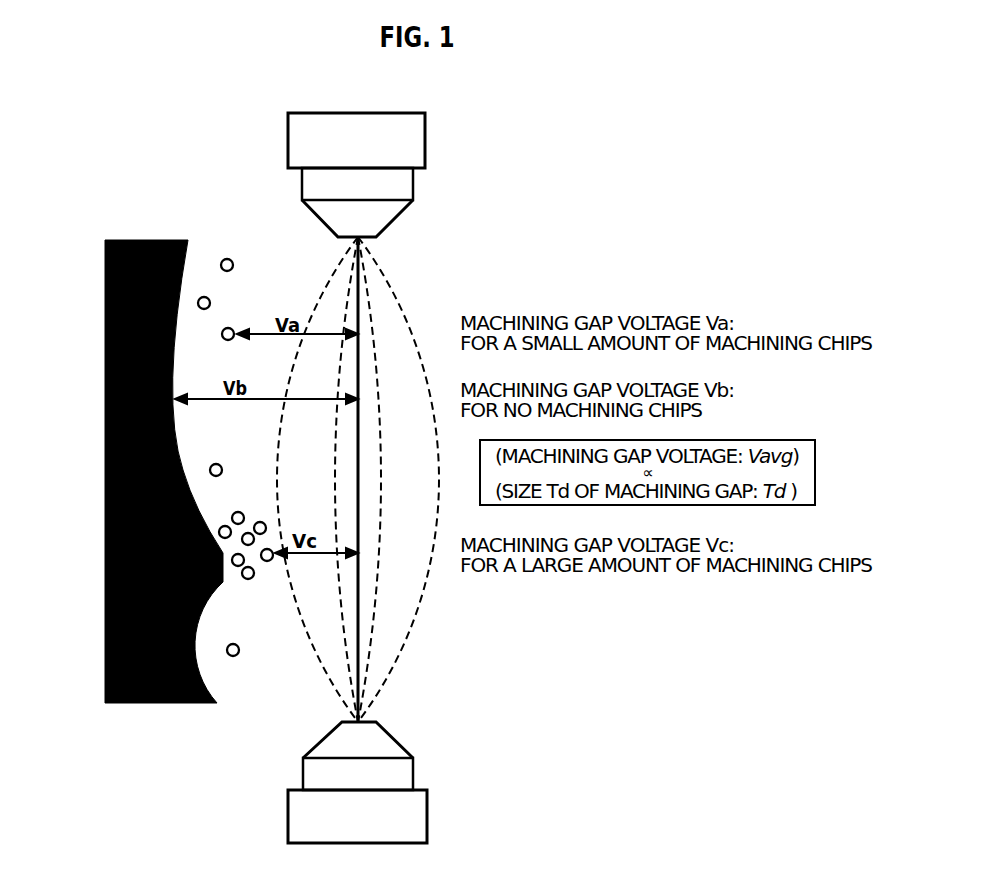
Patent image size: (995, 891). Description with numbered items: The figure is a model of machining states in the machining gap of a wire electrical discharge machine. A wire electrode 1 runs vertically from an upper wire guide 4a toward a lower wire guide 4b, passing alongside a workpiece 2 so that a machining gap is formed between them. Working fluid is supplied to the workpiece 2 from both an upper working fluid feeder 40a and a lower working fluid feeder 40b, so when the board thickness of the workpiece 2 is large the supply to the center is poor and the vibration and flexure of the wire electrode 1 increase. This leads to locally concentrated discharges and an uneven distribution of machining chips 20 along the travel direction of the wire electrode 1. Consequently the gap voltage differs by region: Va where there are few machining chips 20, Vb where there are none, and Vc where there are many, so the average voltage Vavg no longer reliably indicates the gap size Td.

The wire electrode 1 is at (358, 300).
The workpiece 2 is at (105, 357).
The machining chips 20 is at (227, 260).
The upper wire guide 4a is at (425, 138).
The upper working fluid feeder 40a is at (413, 190).
The lower wire guide 4b is at (427, 817).
The lower working fluid feeder 40b is at (413, 773).